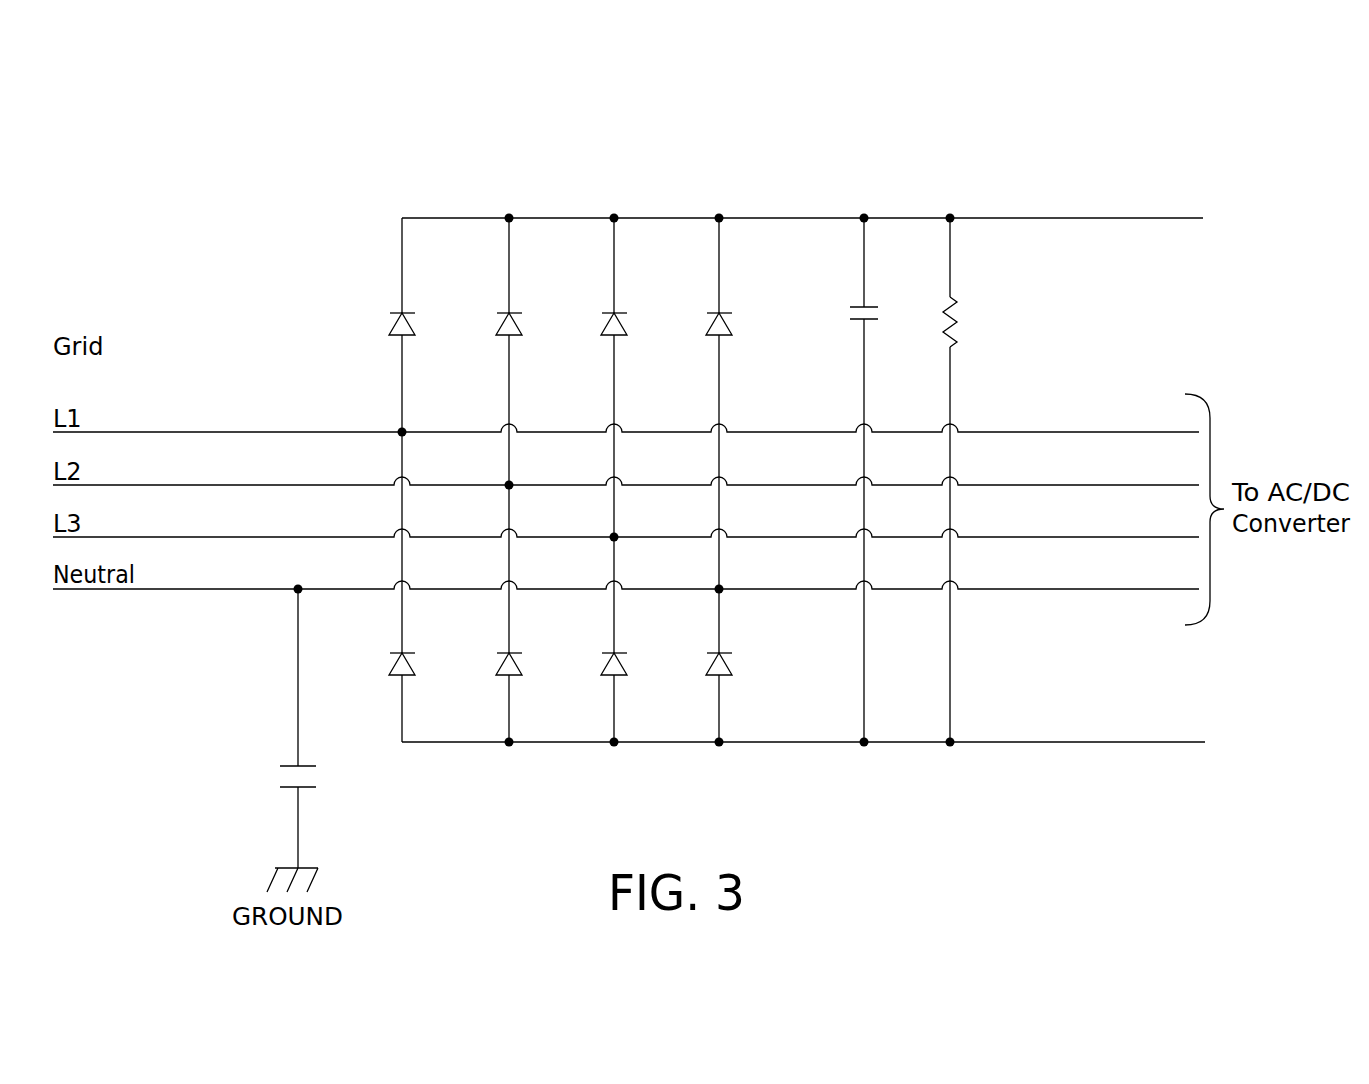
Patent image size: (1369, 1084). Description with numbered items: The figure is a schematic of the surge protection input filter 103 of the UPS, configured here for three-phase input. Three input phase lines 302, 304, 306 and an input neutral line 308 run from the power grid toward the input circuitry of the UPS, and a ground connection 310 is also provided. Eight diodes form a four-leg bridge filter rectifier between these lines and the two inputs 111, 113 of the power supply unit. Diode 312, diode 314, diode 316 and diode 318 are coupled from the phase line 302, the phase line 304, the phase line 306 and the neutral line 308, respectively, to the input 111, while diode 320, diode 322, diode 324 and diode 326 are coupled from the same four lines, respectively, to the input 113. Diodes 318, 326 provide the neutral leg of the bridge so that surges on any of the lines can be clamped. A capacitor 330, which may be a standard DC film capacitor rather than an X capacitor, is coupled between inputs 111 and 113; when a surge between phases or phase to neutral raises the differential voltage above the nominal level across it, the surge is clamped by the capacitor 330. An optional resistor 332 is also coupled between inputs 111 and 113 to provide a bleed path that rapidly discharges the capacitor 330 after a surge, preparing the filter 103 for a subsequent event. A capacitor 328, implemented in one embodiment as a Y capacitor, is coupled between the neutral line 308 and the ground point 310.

The filter 103 is at (687, 152).
The input of the power supply unit 111 is at (998, 218).
The input of the power supply unit 113 is at (1040, 742).
The input phase line 302 is at (172, 432).
The input phase line 304 is at (172, 485).
The input phase line 306 is at (172, 537).
The input neutral line 308 is at (172, 589).
The ground connection 310 is at (292, 868).
The diode 312 is at (399, 312).
The diode 314 is at (506, 312).
The diode 316 is at (611, 312).
The diode 318 is at (716, 312).
The diode 320 is at (399, 652).
The diode 322 is at (506, 652).
The diode 324 is at (611, 652).
The diode 326 is at (716, 652).
The capacitor 328 is at (290, 766).
The capacitor 330 is at (858, 322).
The resistor 332 is at (953, 339).